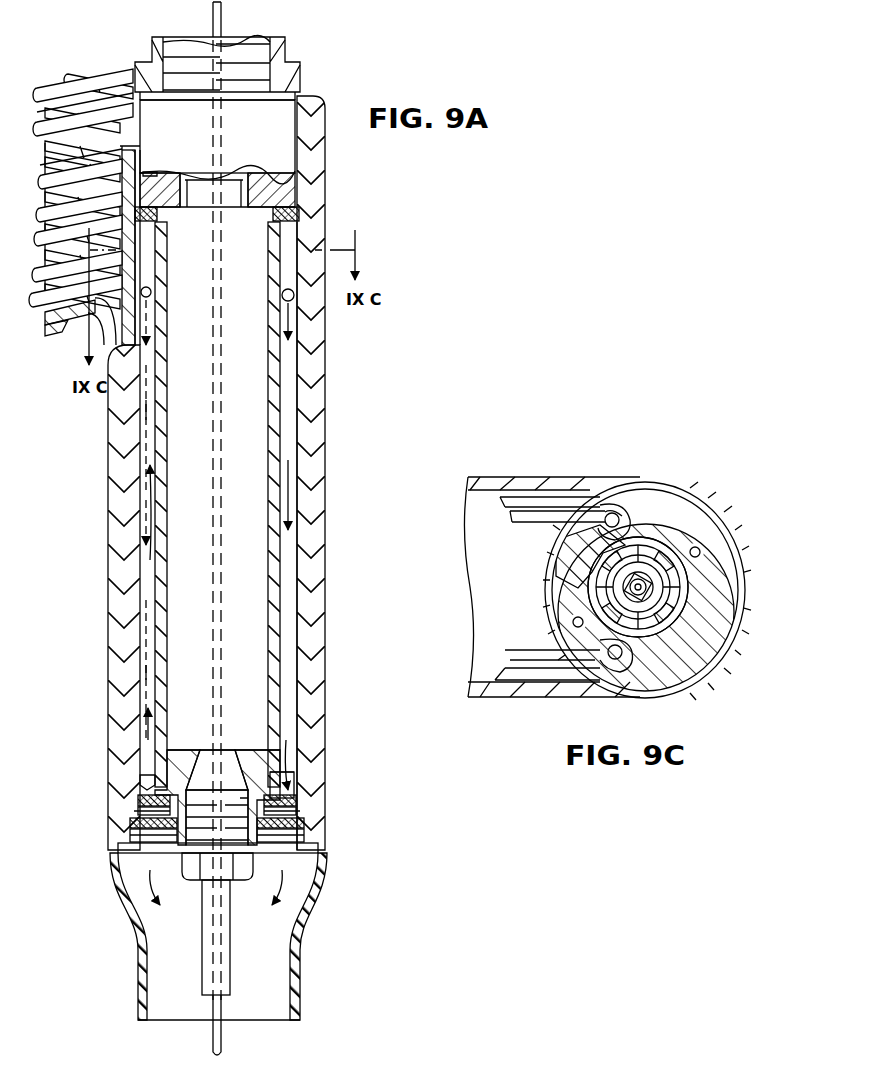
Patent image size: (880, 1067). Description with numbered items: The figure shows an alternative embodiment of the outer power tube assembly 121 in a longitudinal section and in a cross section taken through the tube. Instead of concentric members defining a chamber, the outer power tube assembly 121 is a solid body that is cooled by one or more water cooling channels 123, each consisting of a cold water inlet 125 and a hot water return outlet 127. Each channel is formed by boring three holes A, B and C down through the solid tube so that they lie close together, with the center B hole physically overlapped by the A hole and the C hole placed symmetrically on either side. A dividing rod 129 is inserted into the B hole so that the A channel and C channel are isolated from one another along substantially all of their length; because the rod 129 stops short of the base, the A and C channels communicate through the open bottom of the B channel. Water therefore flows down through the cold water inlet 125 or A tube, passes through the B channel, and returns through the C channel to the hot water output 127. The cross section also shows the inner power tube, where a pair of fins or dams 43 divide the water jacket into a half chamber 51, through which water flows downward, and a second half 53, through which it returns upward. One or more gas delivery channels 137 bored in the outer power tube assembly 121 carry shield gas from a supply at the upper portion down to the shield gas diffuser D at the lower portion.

In FIG. 9C, the fins or dams 43 is at (673, 587).
In FIG. 9C, the half chamber 51 is at (655, 550).
In FIG. 9C, the second half of the chamber 53 is at (660, 697).
In FIG. 9C, the outer power tube assembly 121 is at (688, 638).
In FIG. 9A, the water cooling channel 123 is at (150, 623).
In FIG. 9A, the cold water inlet 125 is at (152, 292).
In FIG. 9C, the cold water inlet 125 is at (485, 677).
In FIG. 9A, the hot water return outlet 127 is at (38, 292).
In FIG. 9C, the hot water return outlet 127 is at (533, 655).
In FIG. 9C, the dividing rod 129 is at (610, 518).
In FIG. 9A, the gas delivery channel 137 is at (283, 432).
In FIG. 9C, the gas delivery channel 137 is at (699, 546).
In FIG. 9A, the A hole A is at (153, 403).
In FIG. 9C, the A hole A is at (630, 517).
In FIG. 9C, the B hole B is at (610, 660).
In FIG. 9A, the C hole C is at (148, 673).
In FIG. 9C, the C hole C is at (573, 530).
In FIG. 9A, the shield gas diffuser D is at (295, 813).